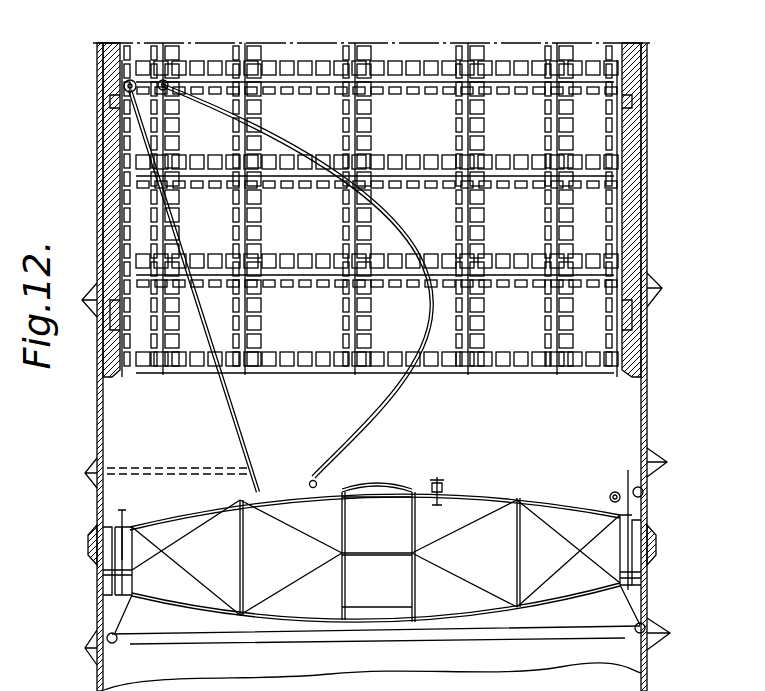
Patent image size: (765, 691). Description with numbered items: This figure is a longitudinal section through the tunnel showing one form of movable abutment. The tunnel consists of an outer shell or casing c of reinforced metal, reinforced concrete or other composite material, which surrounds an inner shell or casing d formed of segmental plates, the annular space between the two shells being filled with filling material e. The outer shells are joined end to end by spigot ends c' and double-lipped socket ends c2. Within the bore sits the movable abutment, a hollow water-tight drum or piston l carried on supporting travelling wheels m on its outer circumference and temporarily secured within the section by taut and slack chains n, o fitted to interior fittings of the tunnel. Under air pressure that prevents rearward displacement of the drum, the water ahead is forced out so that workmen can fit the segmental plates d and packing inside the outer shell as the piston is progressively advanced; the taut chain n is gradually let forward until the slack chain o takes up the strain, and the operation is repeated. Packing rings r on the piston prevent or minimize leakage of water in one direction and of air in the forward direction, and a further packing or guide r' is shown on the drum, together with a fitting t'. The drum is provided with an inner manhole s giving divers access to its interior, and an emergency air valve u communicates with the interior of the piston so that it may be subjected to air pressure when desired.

The outer shell or casing c is at (385, 367).
The inner shell or casing d is at (622, 188).
The filling material e is at (637, 216).
The supporting travelling wheels m is at (638, 490).
The taut chain n is at (230, 412).
The slack chain o is at (381, 429).
The water-tight drum or piston l is at (577, 502).
The inner manhole s is at (390, 490).
The emergency air valve u is at (442, 473).
The roller t' is at (341, 501).
The spigot end c' is at (370, 542).
The double-lipped socket end c2 is at (88, 557).
The packing rings r is at (99, 583).
The guide r' is at (656, 581).